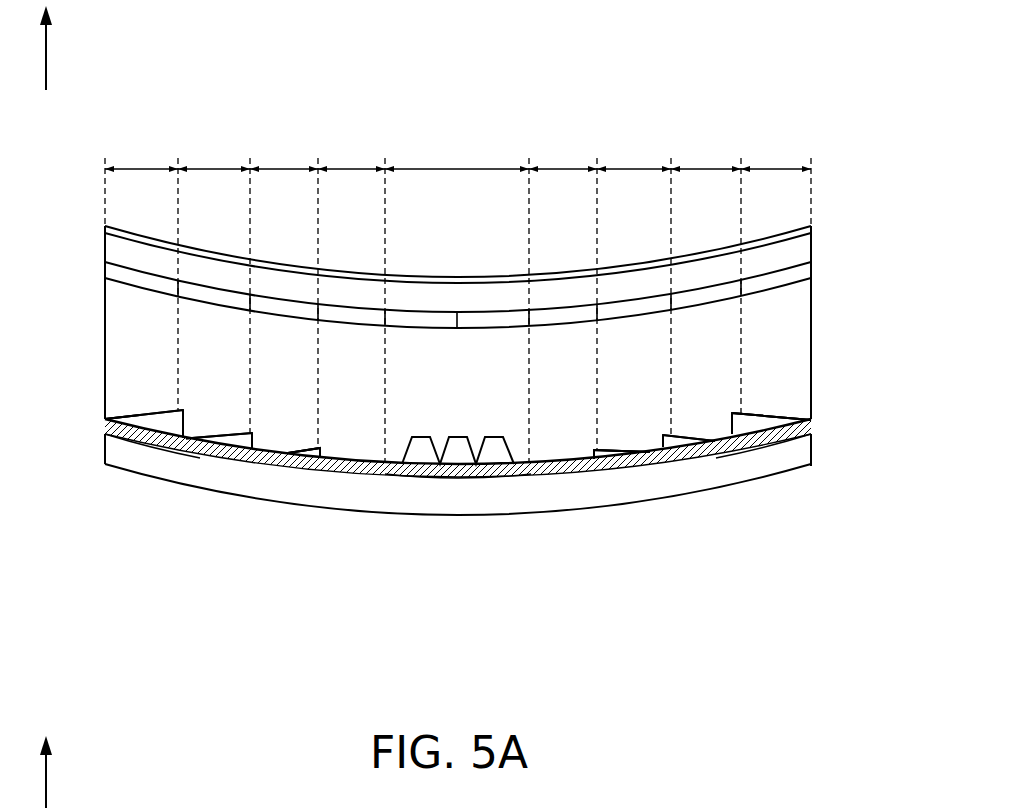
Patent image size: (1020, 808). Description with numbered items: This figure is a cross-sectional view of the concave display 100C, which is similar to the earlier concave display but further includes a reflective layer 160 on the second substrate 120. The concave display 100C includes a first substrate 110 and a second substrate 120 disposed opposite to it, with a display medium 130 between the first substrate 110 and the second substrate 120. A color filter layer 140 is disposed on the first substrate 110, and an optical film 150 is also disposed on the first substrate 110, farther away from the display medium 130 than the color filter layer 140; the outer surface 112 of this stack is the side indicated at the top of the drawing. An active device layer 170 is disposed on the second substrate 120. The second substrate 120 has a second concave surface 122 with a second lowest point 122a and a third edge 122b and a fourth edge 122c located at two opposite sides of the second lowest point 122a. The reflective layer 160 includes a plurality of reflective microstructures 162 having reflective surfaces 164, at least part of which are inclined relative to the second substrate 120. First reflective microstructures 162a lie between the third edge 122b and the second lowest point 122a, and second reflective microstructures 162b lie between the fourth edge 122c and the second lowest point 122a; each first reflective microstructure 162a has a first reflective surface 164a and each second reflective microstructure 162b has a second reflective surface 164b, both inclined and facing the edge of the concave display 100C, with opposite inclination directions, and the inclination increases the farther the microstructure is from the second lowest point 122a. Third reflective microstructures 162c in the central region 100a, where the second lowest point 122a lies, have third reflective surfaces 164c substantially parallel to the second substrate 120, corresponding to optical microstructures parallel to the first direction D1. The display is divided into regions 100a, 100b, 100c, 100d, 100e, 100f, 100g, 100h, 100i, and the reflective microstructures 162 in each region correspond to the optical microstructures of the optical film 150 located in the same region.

The concave display 100C is at (910, 706).
The region 100a is at (457, 294).
The region 100b is at (563, 288).
The region 100c is at (634, 281).
The region 100d is at (706, 270).
The region 100e is at (776, 176).
The region 100f is at (351, 294).
The region 100g is at (284, 287).
The region 100h is at (214, 280).
The region 100i is at (141, 268).
The first substrate 110 is at (796, 258).
The display surface 112 is at (781, 234).
The second substrate 120 is at (790, 458).
The second concave surface 122 is at (128, 432).
The second lowest point 122a is at (458, 478).
The third edge 122b is at (815, 437).
The fourth edge 122c is at (98, 435).
The display medium 130 is at (785, 365).
The color filter layer 140 is at (795, 272).
The optical film 150 is at (812, 231).
The reflective layer 160 is at (821, 401).
The reflective microstructures 162 is at (470, 538).
The first reflective microstructures 162a is at (622, 458).
The second reflective microstructures 162b is at (168, 423).
The third reflective microstructures 162c is at (452, 460).
The reflective surfaces 164 is at (414, 511).
The first reflective surface 164a is at (618, 443).
The second reflective surface 164b is at (143, 408).
The third reflective surface 164c is at (458, 432).
The active device layer 170 is at (795, 430).
The first direction D1 is at (46, 407).